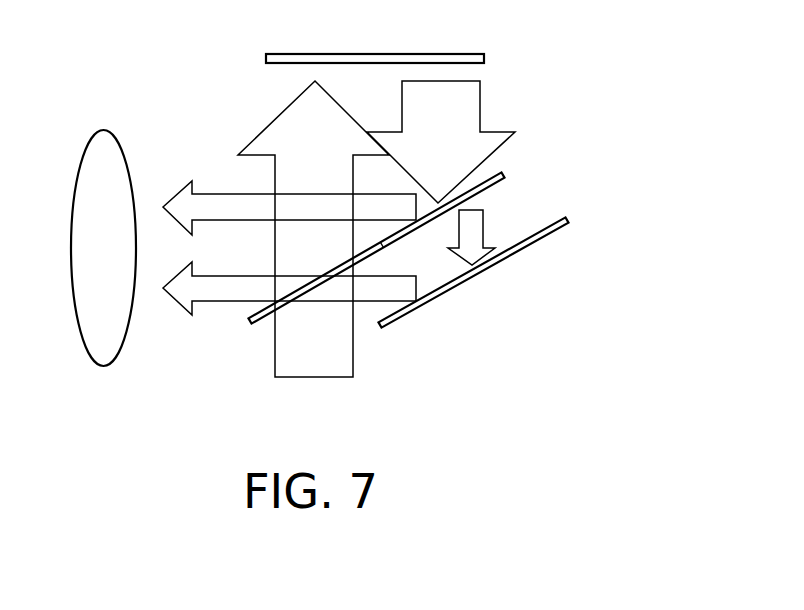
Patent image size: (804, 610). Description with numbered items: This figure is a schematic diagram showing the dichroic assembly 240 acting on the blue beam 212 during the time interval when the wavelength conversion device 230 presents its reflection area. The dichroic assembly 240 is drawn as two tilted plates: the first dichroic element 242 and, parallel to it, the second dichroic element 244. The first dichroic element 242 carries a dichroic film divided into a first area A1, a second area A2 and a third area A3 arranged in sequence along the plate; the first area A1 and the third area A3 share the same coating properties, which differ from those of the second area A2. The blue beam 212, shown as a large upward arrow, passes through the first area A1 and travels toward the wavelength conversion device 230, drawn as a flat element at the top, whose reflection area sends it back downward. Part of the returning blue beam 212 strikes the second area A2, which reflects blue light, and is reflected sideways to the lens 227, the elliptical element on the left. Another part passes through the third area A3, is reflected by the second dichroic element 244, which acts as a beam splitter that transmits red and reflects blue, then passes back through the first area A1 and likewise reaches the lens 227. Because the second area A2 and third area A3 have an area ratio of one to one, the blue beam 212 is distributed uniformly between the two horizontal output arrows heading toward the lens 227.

The blue beam 212 is at (272, 122).
The lens 227 is at (95, 328).
The wavelength conversion device 230 is at (447, 55).
The dichroic assembly 240 is at (464, 249).
The first dichroic element 242 is at (492, 182).
The second dichroic element 244 is at (552, 228).
The first area A1 is at (367, 252).
The second area A2 is at (416, 226).
The third area A3 is at (481, 189).